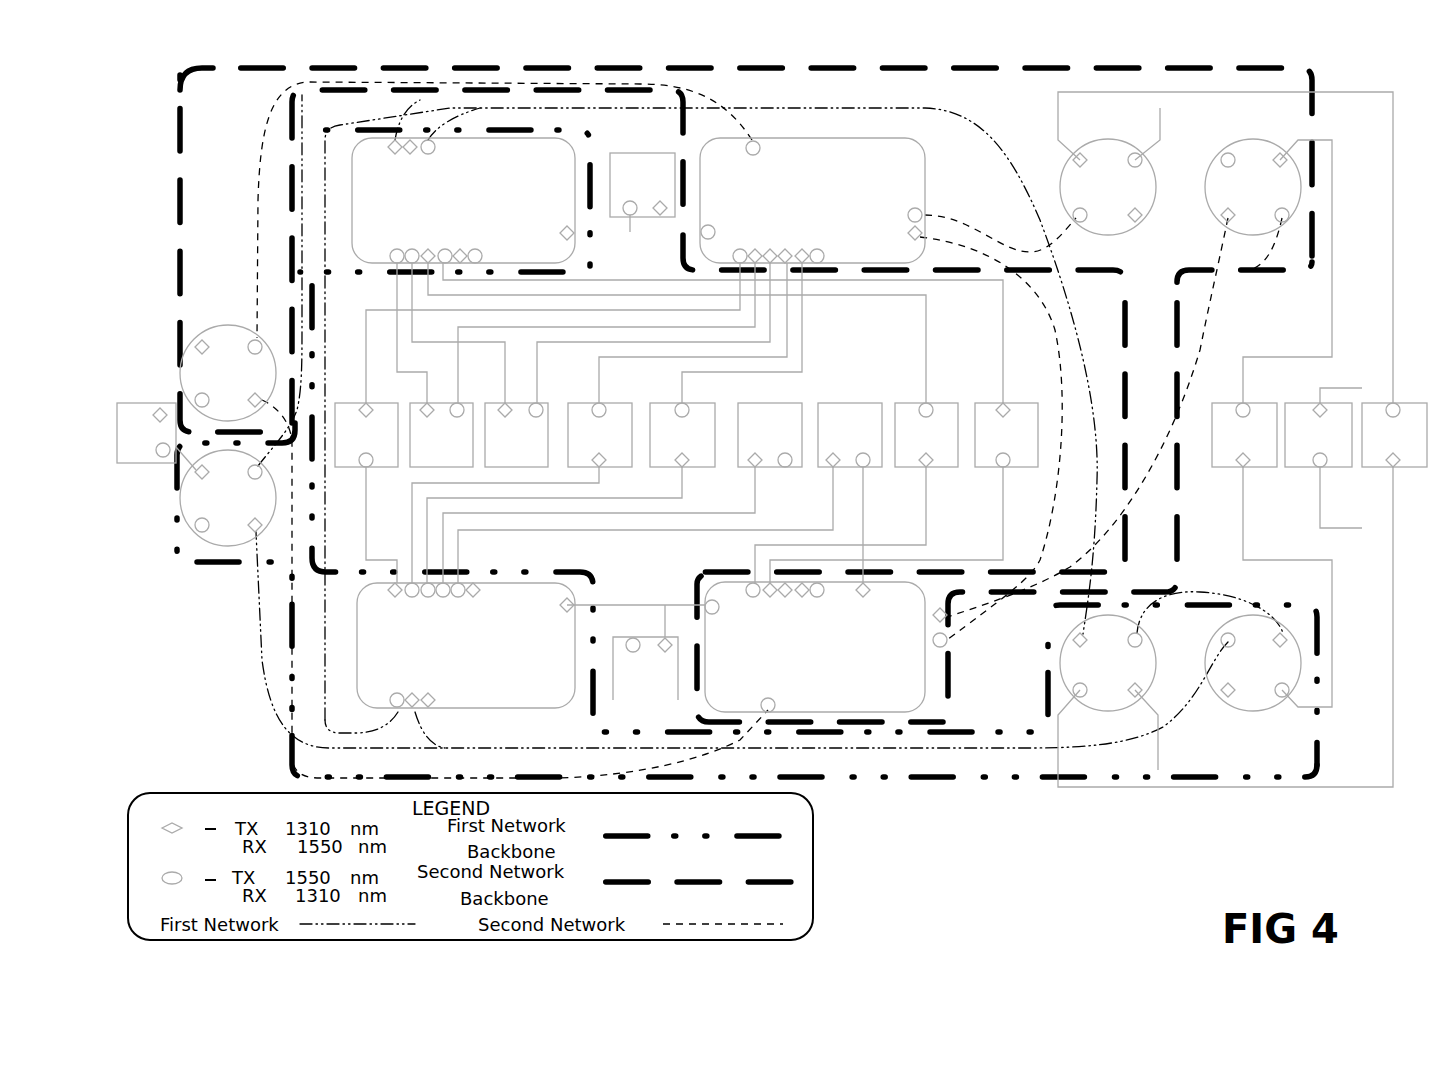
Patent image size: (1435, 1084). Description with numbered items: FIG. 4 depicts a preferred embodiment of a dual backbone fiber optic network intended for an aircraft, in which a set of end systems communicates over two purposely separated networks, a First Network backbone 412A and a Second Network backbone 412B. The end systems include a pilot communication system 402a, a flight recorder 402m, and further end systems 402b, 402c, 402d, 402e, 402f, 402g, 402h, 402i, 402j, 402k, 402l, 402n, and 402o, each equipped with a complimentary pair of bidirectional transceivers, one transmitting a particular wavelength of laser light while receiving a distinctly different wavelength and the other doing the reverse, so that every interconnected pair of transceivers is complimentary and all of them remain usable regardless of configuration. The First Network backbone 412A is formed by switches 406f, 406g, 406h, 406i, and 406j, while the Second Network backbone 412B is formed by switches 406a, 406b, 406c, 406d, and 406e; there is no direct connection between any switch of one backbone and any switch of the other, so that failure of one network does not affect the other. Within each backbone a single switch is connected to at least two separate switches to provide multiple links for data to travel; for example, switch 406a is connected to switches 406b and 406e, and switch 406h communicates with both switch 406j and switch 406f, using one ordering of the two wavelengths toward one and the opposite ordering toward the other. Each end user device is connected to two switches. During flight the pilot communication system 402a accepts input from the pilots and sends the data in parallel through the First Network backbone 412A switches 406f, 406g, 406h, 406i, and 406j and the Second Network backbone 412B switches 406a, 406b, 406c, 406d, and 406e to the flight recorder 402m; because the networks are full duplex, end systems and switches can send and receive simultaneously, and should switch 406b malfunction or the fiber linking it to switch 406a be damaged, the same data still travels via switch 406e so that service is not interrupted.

The pilot communication system 402a is at (146, 433).
The end system 402b is at (366, 435).
The end system 402c is at (441, 435).
The end system 402d is at (516, 435).
The end system 402e is at (600, 435).
The end system 402f is at (682, 435).
The end system 402g is at (770, 435).
The end system 402h is at (850, 435).
The end system 402i is at (926, 435).
The end system 402j is at (1006, 435).
The end system 402k is at (1244, 435).
The end system 402l is at (1318, 435).
The flight recorder 402m is at (1394, 435).
The end system 402n is at (645, 668).
The end system 402o is at (642, 185).
The switch 406a is at (228, 373).
The switch 406b is at (812, 200).
The switch 406c is at (1108, 187).
The switch 406d is at (1253, 187).
The switch 406e is at (826, 647).
The switch 406f is at (228, 498).
The switch 406g is at (463, 200).
The switch 406h is at (466, 645).
The switch 406i is at (1108, 663).
The switch 406j is at (1253, 663).
The First Network backbone 412A is at (946, 790).
The Second Network backbone 412B is at (172, 254).